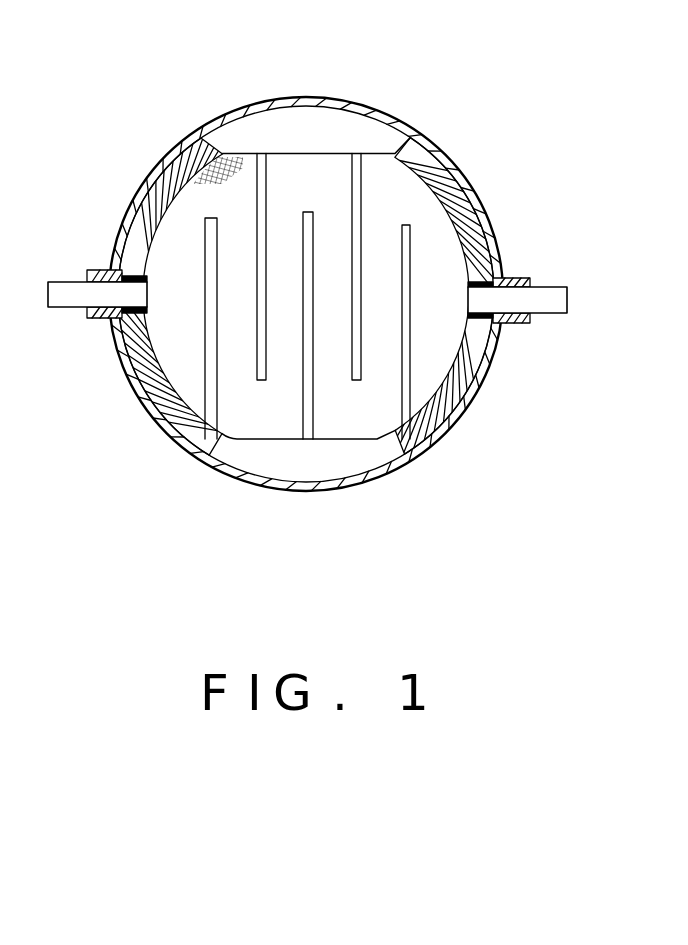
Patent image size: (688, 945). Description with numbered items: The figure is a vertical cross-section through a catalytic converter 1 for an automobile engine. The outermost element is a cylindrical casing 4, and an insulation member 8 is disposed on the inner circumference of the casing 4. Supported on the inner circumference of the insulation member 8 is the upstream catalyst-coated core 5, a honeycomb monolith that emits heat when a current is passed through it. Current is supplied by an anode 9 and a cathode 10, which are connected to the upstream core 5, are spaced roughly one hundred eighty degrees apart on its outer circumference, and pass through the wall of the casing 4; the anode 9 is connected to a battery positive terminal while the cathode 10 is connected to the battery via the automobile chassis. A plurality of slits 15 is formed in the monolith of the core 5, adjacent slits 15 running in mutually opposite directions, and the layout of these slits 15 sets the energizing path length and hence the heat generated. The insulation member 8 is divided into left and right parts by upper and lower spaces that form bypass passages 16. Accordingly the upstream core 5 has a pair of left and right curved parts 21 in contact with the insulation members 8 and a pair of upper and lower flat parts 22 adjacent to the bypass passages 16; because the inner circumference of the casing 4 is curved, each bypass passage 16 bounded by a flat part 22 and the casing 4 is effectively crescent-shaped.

The catalytic converter 1 is at (176, 450).
The casing 4 is at (213, 125).
The upstream catalyst-coated core 5 is at (262, 443).
The insulation member 8 is at (152, 376).
The anode 9 is at (63, 288).
The cathode 10 is at (547, 292).
The slits 15 is at (355, 208).
The bypass passages 16 is at (337, 133).
The curved parts 21 is at (153, 180).
The flat parts 22 is at (283, 152).